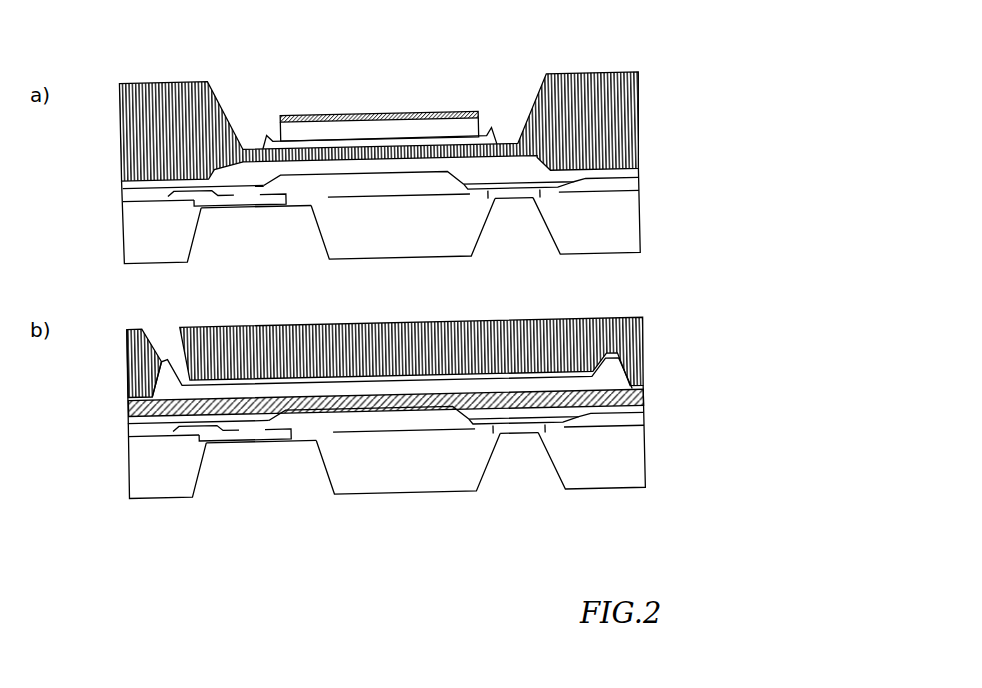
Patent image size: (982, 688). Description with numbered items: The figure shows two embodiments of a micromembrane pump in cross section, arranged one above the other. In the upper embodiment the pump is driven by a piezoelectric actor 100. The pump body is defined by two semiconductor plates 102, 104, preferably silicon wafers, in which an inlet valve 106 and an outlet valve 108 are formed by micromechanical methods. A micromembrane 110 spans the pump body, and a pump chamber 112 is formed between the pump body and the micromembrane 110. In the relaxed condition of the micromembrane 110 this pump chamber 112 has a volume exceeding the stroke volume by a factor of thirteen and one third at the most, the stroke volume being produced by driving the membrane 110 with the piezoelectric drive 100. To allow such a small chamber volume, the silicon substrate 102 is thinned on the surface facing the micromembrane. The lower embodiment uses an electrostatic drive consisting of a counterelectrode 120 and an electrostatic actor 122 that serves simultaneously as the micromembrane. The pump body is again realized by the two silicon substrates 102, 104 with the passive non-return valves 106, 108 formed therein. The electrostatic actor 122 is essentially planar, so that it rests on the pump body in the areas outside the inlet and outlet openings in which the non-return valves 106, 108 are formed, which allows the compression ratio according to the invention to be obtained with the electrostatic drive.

The piezoelectric actor 100 is at (332, 112).
The semiconductor plate 102 is at (642, 180).
The semiconductor plate 104 is at (642, 237).
The inlet valve 106 is at (512, 200).
The outlet valve 108 is at (255, 210).
The micromembrane 110 is at (508, 133).
The pump chamber 112 is at (226, 176).
The counterelectrode 120 is at (645, 332).
The electrostatic actor 122 is at (645, 392).